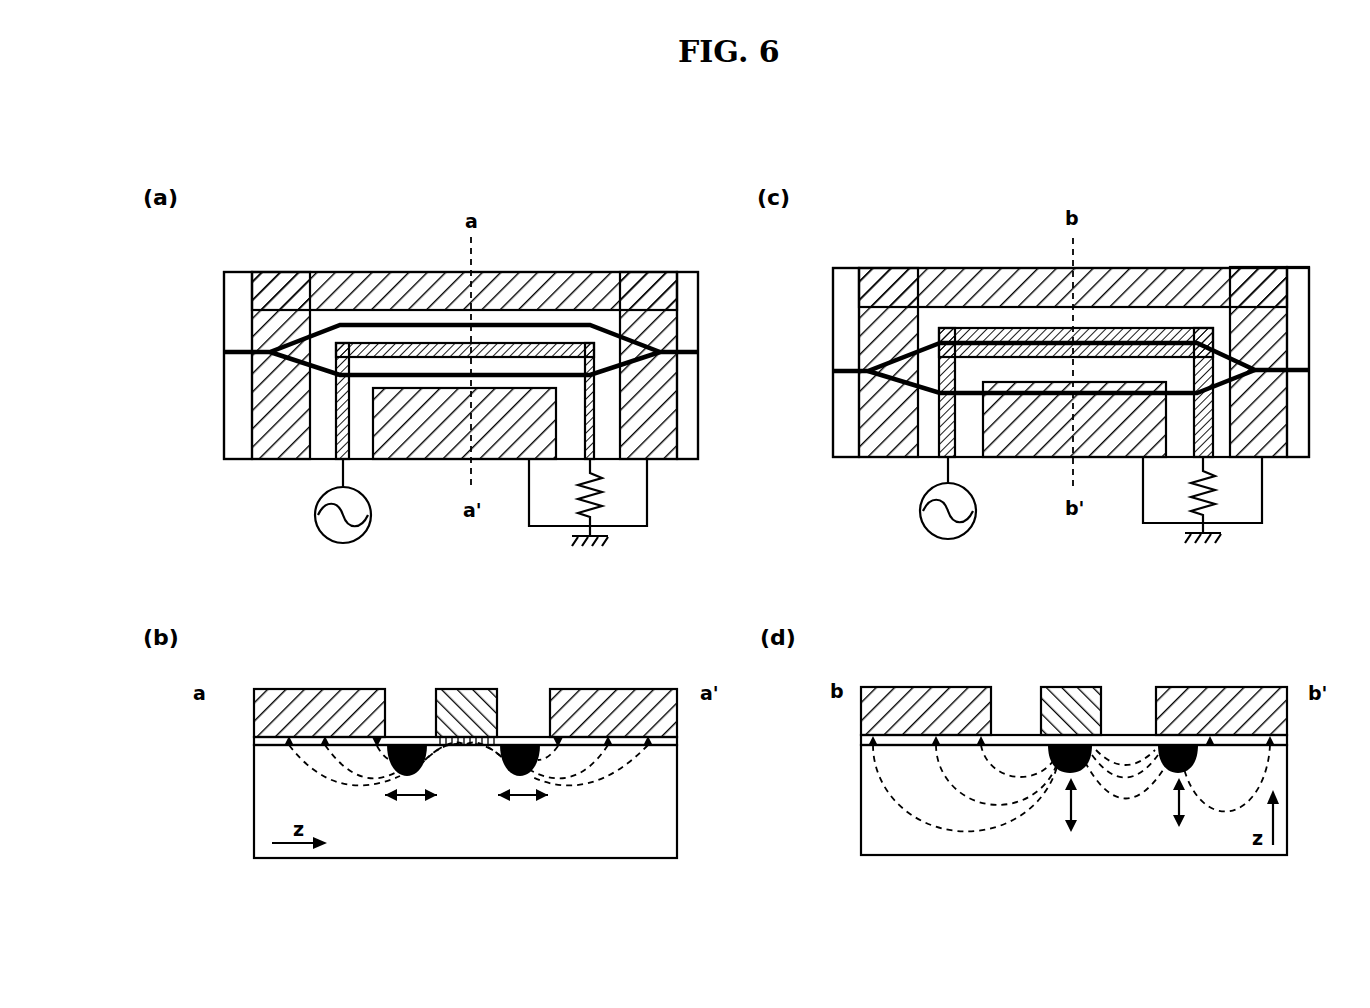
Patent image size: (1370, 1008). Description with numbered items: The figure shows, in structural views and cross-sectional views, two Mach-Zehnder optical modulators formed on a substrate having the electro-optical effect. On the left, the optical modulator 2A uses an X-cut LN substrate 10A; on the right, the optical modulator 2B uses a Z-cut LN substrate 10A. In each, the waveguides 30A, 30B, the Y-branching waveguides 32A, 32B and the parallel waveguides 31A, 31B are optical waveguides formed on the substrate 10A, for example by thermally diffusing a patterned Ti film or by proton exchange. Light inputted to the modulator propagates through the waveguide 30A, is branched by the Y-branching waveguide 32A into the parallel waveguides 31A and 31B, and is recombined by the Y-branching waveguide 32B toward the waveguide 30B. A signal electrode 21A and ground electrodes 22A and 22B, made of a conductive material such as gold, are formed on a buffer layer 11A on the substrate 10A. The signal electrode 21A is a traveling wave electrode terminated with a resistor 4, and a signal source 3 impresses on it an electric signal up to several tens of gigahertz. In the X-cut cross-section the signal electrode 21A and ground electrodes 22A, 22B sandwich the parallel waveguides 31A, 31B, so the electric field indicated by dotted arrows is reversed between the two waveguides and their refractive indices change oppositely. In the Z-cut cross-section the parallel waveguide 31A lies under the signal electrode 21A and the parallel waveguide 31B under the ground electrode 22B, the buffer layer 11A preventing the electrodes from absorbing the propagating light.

The optical modulator 2A is at (698, 435).
The optical modulator 2B is at (833, 400).
The signal source 3 is at (320, 522).
The resistor 4 is at (612, 495).
The LN substrate 10A is at (254, 816).
The buffer layer 11A is at (254, 742).
The signal electrode 21A is at (337, 447).
The ground electrode 22A is at (272, 462).
The ground electrode 22B is at (450, 462).
The waveguide 30A is at (242, 350).
The waveguide 30B is at (687, 347).
The parallel waveguide 31A is at (372, 327).
The parallel waveguide 31B is at (423, 372).
The Y-branching waveguide 32A is at (312, 345).
The Y-branching waveguide 32B is at (621, 330).